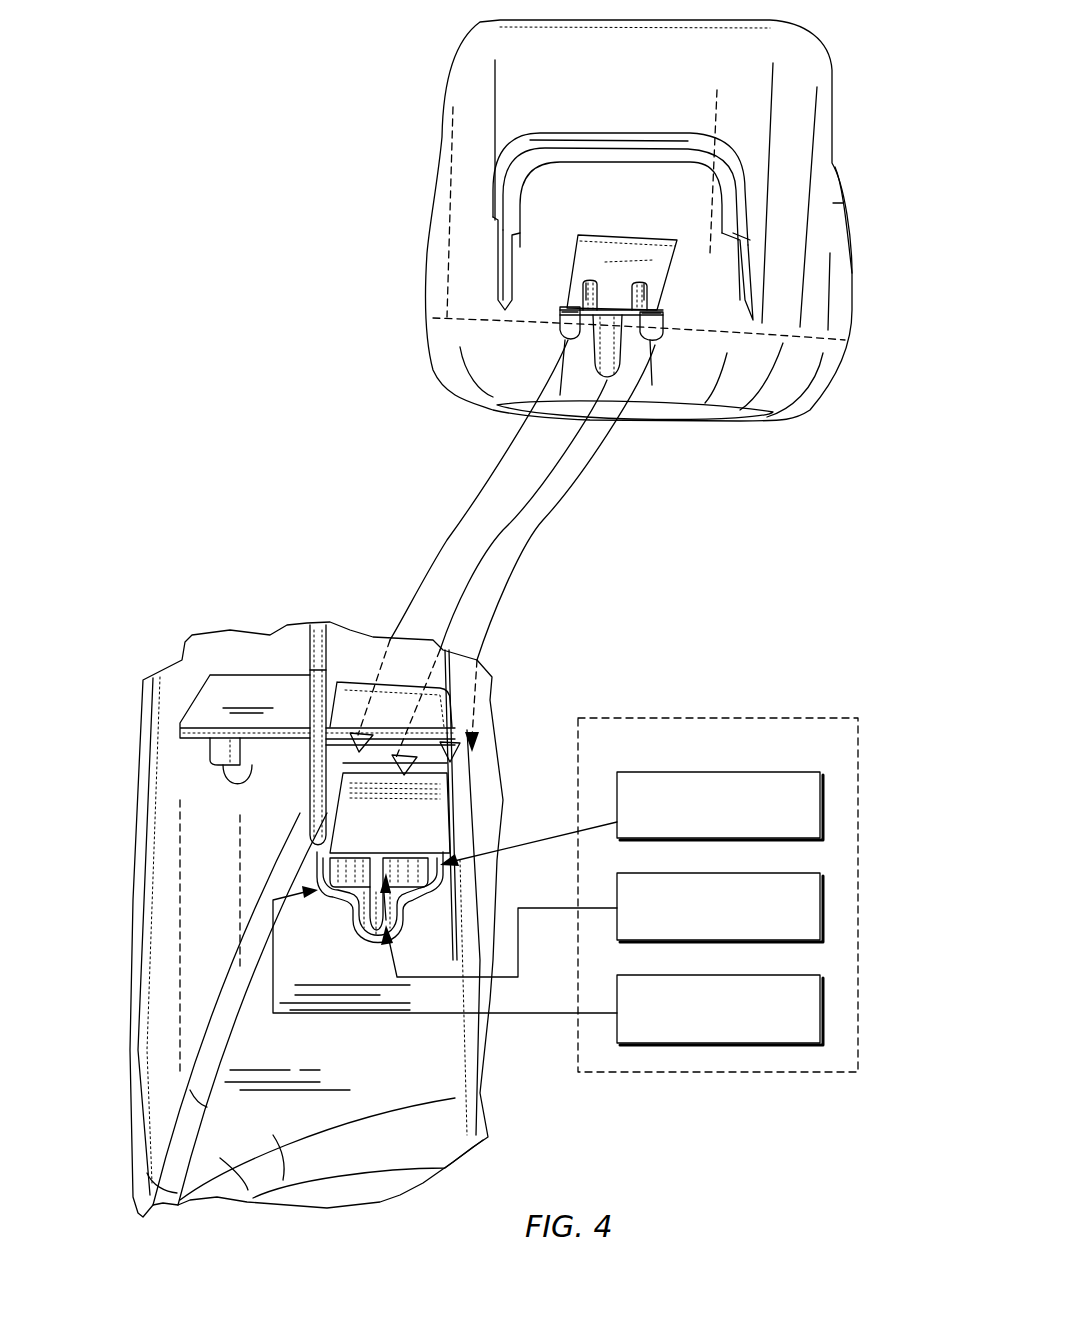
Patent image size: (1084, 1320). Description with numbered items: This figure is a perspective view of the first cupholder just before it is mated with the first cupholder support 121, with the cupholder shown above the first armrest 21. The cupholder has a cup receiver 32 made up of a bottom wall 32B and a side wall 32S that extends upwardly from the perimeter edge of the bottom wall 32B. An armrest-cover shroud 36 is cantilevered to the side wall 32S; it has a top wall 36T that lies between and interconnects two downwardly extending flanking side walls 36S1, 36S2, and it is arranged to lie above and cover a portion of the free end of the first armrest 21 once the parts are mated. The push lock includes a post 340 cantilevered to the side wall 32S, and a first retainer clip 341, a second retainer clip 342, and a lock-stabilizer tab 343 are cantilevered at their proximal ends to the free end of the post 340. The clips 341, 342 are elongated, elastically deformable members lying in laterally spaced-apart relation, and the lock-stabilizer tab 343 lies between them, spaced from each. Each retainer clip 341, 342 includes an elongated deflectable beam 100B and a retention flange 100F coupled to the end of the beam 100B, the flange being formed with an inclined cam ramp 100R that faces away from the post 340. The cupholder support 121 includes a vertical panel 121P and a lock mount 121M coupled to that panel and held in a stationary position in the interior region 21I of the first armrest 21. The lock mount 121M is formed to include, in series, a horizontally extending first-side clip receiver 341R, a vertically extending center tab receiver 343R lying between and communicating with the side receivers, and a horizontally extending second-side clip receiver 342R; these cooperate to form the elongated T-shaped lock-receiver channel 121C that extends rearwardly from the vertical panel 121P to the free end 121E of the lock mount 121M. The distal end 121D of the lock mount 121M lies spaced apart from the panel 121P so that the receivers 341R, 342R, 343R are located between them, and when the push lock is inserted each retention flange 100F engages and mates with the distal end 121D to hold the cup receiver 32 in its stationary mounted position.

The cup receiver 32 is at (447, 42).
The side wall 32S is at (800, 115).
The bottom wall 32B is at (688, 422).
The armrest-cover shroud 36 is at (614, 125).
The top wall 36T is at (655, 138).
The first flanking side wall 36S1 is at (497, 225).
The second flanking side wall 36S2 is at (753, 262).
The post 340 is at (622, 260).
The first retainer clip 341 is at (557, 290).
The second retainer clip 342 is at (657, 292).
The lock-stabilizer tab 343 is at (607, 352).
The elongated deflectable beam 100B is at (583, 282).
The retention flange 100F is at (557, 293).
The inclined cam ramp 100R is at (560, 395).
The first armrest 21 is at (490, 762).
The interior region 21I is at (180, 806).
The vertical panel 121P is at (488, 685).
The first cupholder support 121 is at (318, 882).
The free end of lock mount 121E is at (417, 837).
The T-shaped lock-receiver channel 121C is at (400, 917).
The distal end 121D is at (410, 917).
The lock mount 121M is at (603, 718).
The second-side clip receiver 342R is at (820, 815).
The center tab receiver 343R is at (820, 915).
The first-side clip receiver 341R is at (820, 1020).